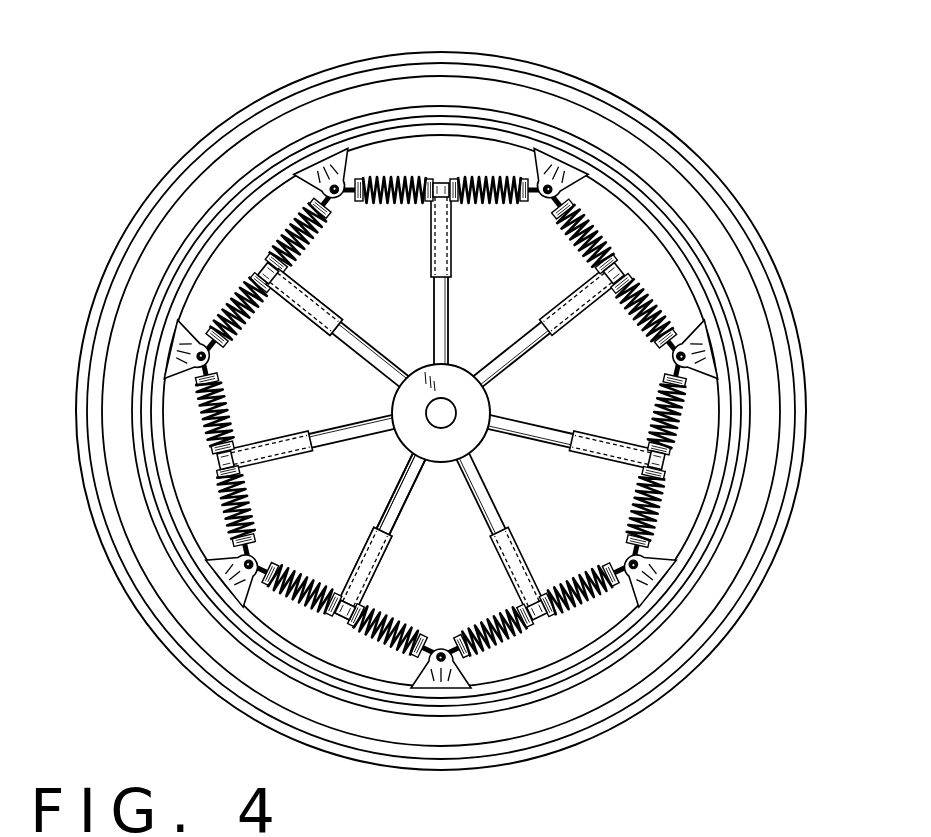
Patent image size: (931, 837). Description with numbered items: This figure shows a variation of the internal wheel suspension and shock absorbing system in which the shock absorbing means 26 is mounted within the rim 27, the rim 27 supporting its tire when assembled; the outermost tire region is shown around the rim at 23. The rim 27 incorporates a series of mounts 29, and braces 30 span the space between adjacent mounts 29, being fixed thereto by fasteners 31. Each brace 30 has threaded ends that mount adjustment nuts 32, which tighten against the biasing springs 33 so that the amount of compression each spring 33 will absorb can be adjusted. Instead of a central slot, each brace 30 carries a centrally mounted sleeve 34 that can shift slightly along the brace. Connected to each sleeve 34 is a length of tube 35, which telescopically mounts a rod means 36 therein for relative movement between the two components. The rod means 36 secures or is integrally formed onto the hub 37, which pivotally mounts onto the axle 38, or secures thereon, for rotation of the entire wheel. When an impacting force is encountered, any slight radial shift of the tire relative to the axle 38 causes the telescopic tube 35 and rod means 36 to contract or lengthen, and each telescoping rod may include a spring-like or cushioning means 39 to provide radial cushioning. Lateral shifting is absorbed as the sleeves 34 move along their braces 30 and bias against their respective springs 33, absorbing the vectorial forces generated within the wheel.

The tire 23 is at (560, 112).
The shock absorbing means 26 is at (672, 293).
The rim 27 is at (640, 208).
The mounts 29 is at (204, 357).
The braces 30 is at (333, 238).
The fasteners 31 is at (553, 193).
The adjustment nuts 32 is at (530, 205).
The biasing springs 33 is at (622, 312).
The sleeve 34 is at (443, 183).
The tube 35 is at (433, 252).
The rod means 36 is at (433, 298).
The hub 37 is at (460, 380).
The axle 38 is at (445, 416).
The spring-like or cushioning means 39 is at (355, 550).